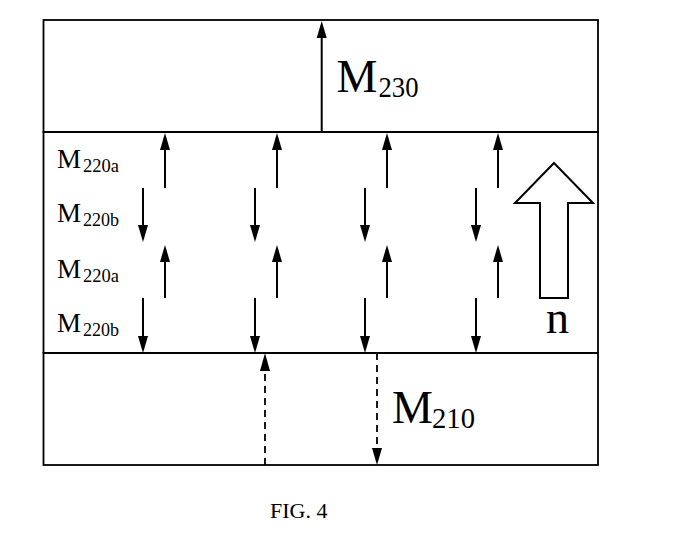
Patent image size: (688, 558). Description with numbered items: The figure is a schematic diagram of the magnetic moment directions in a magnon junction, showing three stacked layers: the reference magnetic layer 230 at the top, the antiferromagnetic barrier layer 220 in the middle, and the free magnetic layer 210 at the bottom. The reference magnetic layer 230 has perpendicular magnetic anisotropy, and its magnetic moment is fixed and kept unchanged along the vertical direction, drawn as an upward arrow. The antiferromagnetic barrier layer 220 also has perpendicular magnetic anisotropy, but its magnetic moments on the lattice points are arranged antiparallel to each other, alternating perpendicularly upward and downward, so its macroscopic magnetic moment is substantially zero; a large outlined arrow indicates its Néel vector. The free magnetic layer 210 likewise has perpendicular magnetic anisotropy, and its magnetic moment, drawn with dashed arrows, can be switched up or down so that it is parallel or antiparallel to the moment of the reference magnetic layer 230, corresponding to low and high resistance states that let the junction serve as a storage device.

The reference magnetic layer 230 is at (321, 76).
The antiferromagnetic barrier layer 220 is at (321, 242).
The free magnetic layer 210 is at (321, 409).